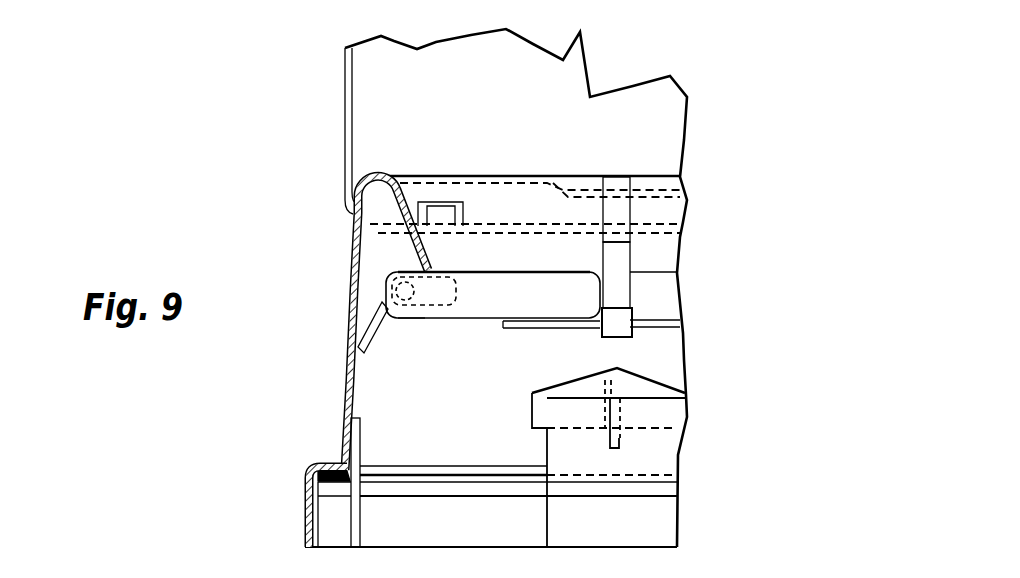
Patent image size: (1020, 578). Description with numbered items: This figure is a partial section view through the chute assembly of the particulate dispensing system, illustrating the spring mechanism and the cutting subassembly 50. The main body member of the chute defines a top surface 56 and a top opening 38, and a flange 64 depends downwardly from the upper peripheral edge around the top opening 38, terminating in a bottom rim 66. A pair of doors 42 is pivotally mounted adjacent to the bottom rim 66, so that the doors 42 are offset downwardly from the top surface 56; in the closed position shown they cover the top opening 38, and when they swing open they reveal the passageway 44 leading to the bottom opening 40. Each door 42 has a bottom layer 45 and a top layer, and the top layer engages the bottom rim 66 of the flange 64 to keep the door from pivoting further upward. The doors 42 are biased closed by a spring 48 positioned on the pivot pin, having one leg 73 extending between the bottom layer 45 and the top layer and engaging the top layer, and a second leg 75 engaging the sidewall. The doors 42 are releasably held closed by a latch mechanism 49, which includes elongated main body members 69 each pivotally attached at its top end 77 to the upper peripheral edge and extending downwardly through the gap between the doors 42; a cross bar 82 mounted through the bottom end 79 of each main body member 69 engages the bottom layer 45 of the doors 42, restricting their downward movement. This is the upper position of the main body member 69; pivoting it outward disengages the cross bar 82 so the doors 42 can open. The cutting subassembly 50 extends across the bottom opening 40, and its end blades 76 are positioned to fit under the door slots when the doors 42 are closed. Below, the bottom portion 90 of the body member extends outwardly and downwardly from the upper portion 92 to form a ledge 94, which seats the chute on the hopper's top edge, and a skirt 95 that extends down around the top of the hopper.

The top opening 38 is at (408, 208).
The bottom opening 40 is at (496, 526).
The doors 42 is at (572, 292).
The passageway 44 is at (356, 383).
The bottom layer 45 is at (408, 320).
The spring 48 is at (367, 328).
The latch mechanism 49 is at (623, 280).
The cutting subassembly 50 is at (553, 388).
The top surface 56 is at (378, 177).
The flange 64 is at (433, 271).
The bottom rim 66 is at (439, 273).
The main body members 69 is at (618, 295).
The leg 73 is at (455, 272).
The second leg 75 is at (378, 306).
The end blades 76 is at (533, 410).
The top end 77 is at (617, 188).
The bottom end 79 is at (610, 337).
The cross bar 82 is at (560, 328).
The bottom portion 90 is at (303, 515).
The upper portion 92 is at (340, 432).
The ledge 94 is at (322, 462).
The skirt 95 is at (312, 493).